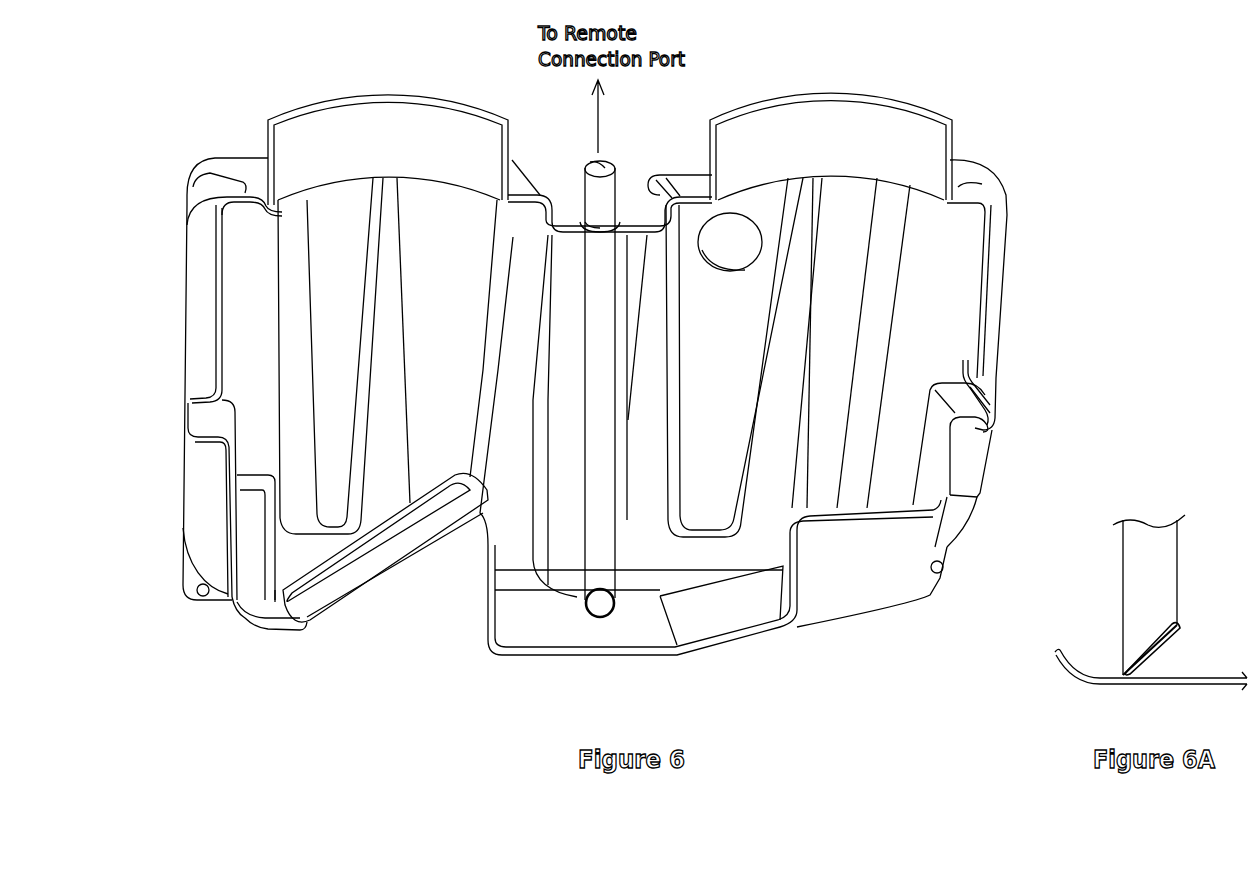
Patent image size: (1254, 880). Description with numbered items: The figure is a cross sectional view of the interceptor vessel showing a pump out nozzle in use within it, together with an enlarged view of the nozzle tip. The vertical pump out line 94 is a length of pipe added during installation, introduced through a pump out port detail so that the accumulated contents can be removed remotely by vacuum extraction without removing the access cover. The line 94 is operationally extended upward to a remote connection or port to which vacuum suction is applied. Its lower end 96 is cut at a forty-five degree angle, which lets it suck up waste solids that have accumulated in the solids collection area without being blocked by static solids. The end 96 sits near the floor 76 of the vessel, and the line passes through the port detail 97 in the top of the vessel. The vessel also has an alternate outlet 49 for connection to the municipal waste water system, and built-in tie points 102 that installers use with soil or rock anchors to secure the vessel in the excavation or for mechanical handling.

In FIG. 6, the alternate outlet 49 is at (742, 254).
In FIG. 6A, the base plate 76 is at (1110, 686).
In FIG. 6, the vertical pump out line 94 is at (585, 178).
In FIG. 6A, the vertical pump out line 94 is at (1122, 580).
In FIG. 6A, the end 96 is at (1120, 672).
In FIG. 6, the pin hole 97 is at (622, 222).
In FIG. 6, the built-in tie points 102 is at (208, 597).